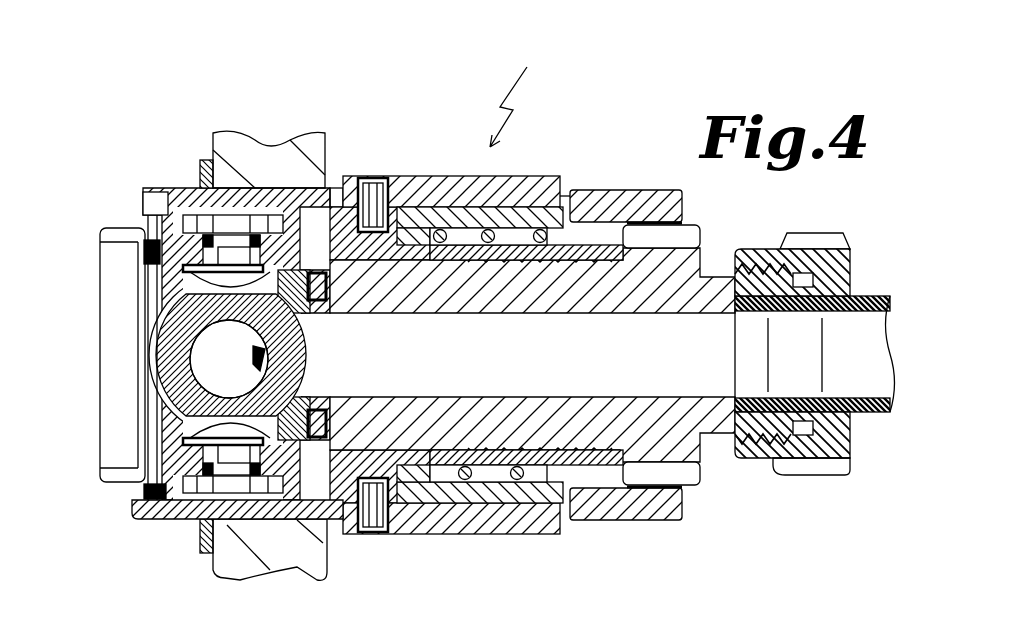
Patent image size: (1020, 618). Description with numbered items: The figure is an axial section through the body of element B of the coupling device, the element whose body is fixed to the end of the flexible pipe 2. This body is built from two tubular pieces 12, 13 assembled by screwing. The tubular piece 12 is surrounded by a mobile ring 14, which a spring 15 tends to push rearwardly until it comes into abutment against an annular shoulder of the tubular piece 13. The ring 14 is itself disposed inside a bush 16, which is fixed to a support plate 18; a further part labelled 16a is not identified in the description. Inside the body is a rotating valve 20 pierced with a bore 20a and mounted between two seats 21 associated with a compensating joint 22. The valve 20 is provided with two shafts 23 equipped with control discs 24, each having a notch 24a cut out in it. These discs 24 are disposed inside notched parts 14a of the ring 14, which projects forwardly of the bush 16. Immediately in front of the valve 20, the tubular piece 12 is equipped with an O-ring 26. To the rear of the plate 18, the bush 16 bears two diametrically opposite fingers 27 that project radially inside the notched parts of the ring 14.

The flexible pipe 2 is at (867, 293).
The tubular piece 12 is at (160, 230).
The tubular piece 13 is at (678, 440).
The mobile ring 14 is at (627, 205).
The notched parts 14a is at (428, 200).
The spring 15 is at (457, 475).
The bush 16 is at (535, 517).
The retaining plate portion 16a is at (134, 500).
The support plate 18 is at (280, 150).
The rotating valve 20 is at (162, 372).
The bore 20a is at (262, 352).
The seats 21 is at (146, 262).
The compensating joint 22 is at (330, 275).
The shafts 23 is at (180, 232).
The control discs 24 is at (213, 233).
The notch 24a is at (267, 233).
The O-ring 26 is at (103, 232).
The fingers 27 is at (395, 210).
The element B is at (524, 95).